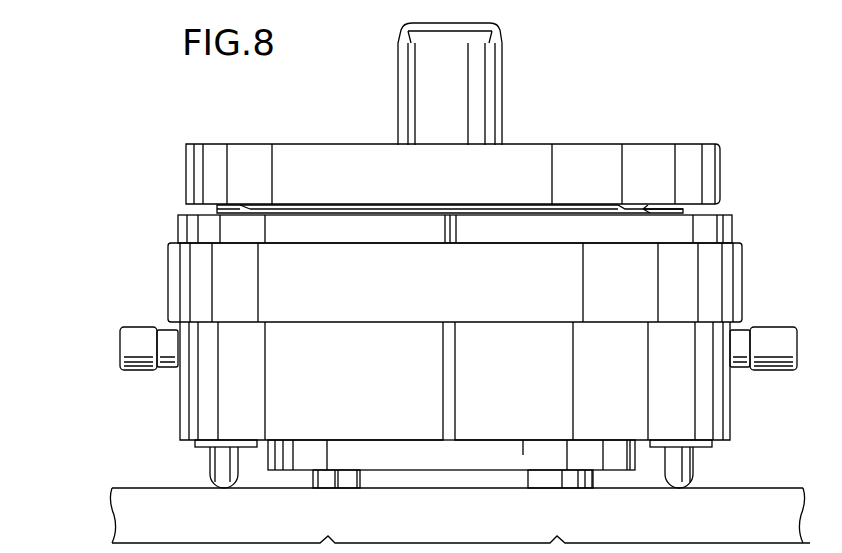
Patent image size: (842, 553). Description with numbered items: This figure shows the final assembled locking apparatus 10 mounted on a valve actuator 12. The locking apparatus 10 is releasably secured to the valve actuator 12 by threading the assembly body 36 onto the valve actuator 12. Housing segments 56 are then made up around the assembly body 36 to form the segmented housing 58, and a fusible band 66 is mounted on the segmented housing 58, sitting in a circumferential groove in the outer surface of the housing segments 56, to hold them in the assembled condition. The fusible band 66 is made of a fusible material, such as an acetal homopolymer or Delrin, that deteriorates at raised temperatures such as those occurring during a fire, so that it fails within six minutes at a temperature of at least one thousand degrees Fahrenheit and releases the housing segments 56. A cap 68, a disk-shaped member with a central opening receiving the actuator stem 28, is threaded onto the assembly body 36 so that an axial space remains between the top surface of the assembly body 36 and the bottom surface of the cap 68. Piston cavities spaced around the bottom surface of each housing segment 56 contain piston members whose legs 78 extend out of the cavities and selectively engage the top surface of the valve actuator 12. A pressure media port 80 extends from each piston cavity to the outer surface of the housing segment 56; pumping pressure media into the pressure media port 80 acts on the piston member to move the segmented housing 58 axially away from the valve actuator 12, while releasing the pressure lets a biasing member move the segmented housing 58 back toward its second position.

The locking apparatus 10 is at (770, 181).
The valve actuator 12 is at (128, 488).
The actuator stem 28 is at (502, 70).
The assembly body 36 is at (613, 457).
The housing segment 56 is at (717, 402).
The segmented housing 58 is at (161, 409).
The fusible band 66 is at (737, 270).
The cap 68 is at (695, 157).
The leg 78 is at (690, 463).
The pressure media port 80 is at (775, 330).